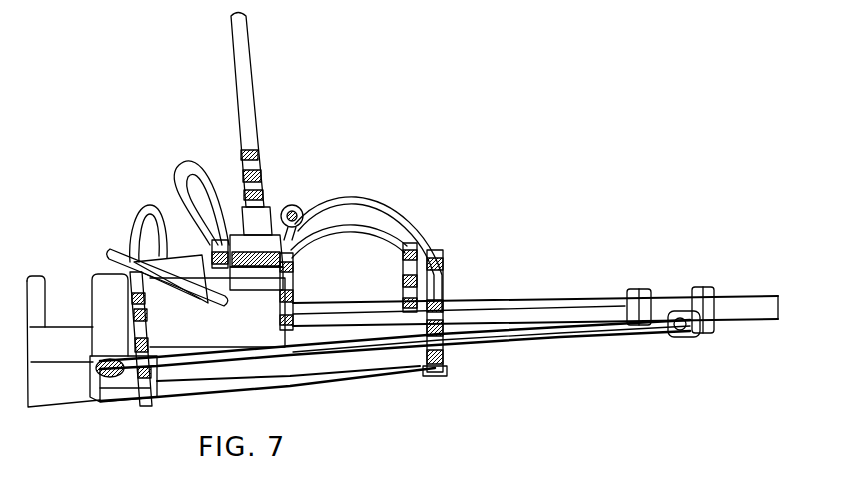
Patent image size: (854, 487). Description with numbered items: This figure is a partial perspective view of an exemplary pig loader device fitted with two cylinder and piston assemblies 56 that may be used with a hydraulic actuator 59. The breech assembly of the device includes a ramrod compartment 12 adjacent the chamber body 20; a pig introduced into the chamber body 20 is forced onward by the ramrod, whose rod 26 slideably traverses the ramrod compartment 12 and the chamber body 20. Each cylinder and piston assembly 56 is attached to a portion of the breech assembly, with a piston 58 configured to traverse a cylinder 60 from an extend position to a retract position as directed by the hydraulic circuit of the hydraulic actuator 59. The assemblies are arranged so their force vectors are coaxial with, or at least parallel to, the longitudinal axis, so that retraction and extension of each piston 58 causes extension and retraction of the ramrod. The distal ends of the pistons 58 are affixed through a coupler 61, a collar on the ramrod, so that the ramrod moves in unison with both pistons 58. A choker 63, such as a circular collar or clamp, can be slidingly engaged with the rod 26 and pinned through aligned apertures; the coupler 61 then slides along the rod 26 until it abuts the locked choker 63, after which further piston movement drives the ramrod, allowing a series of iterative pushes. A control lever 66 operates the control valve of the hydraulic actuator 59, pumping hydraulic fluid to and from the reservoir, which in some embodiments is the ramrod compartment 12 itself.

The chamber body 20 is at (69, 286).
The ramrod compartment 12 is at (113, 266).
The control lever 66 is at (250, 70).
The hydraulic actuator 59 is at (318, 190).
The rod 26 is at (490, 301).
The choker 63 is at (634, 287).
The coupler 61 is at (700, 284).
The piston 58 is at (573, 342).
The cylinder 60 is at (330, 383).
The cylinder and piston assembly 56 is at (427, 380).